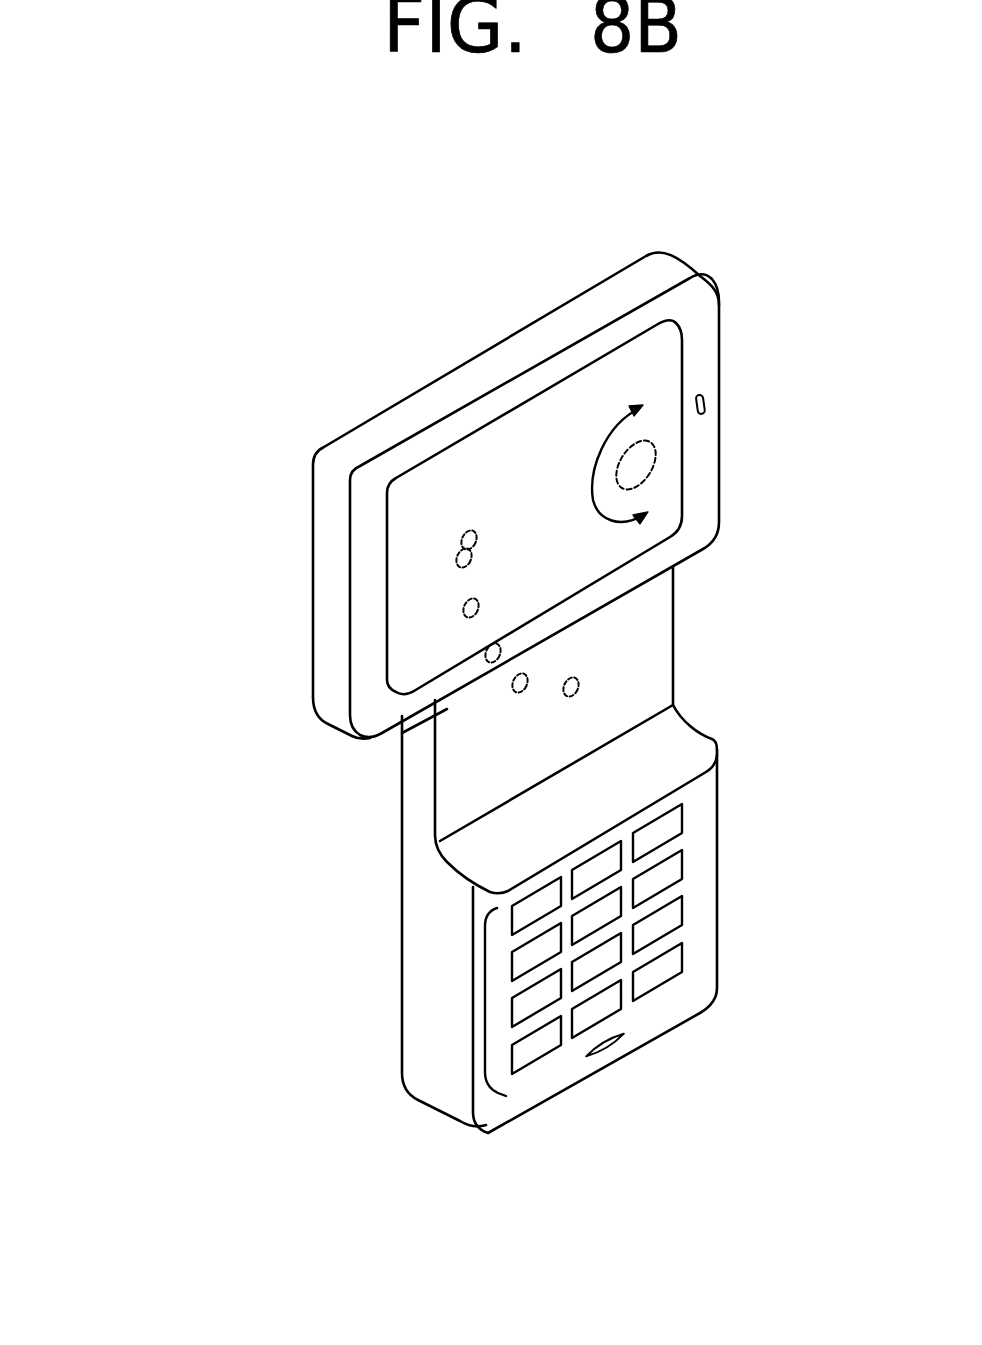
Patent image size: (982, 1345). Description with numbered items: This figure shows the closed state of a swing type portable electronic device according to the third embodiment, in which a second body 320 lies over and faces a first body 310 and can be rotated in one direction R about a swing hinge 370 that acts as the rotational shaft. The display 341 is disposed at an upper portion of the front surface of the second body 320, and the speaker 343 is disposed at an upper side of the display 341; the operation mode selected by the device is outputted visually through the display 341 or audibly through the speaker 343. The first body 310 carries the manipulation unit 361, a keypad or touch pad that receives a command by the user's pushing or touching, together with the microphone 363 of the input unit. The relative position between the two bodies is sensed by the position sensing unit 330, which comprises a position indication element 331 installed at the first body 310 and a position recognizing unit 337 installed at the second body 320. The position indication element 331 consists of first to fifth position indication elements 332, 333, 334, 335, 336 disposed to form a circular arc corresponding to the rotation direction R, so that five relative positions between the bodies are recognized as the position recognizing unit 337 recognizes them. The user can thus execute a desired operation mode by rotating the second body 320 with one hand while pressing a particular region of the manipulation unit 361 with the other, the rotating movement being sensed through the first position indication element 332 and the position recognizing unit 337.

The first body 310 is at (333, 530).
The second body 320 is at (420, 1057).
The position sensing unit 330 is at (163, 798).
The position indication element 331 is at (252, 840).
The first position indication element 332 is at (565, 697).
The second position indication element 333 is at (516, 692).
The third position indication element 334 is at (487, 664).
The fourth position indication element 335 is at (465, 620).
The fifth position indication element 336 is at (460, 568).
The position recognizing unit 337 is at (461, 543).
The display 341 is at (660, 360).
The speaker 343 is at (704, 400).
The manipulation unit 361 is at (478, 1008).
The microphone 363 is at (603, 1047).
The swing hinge 370 is at (655, 450).